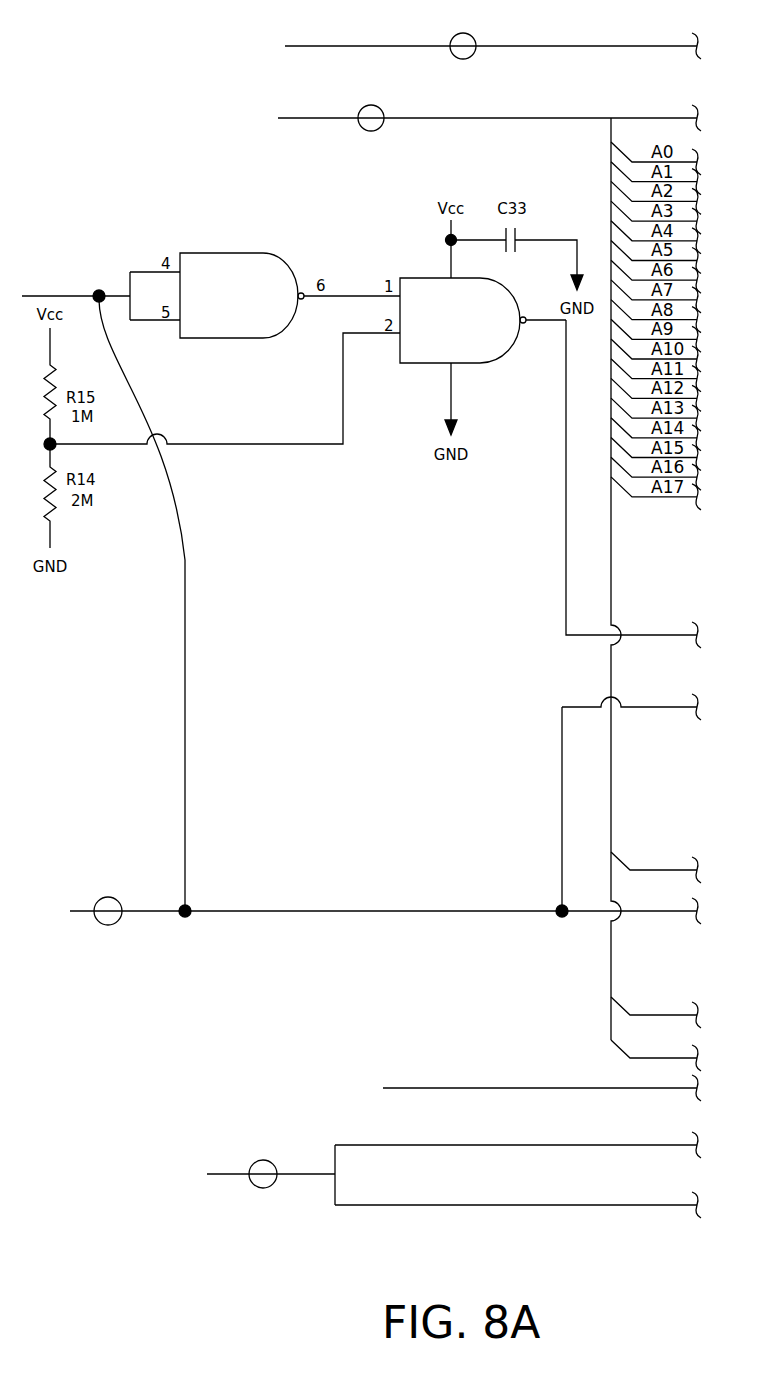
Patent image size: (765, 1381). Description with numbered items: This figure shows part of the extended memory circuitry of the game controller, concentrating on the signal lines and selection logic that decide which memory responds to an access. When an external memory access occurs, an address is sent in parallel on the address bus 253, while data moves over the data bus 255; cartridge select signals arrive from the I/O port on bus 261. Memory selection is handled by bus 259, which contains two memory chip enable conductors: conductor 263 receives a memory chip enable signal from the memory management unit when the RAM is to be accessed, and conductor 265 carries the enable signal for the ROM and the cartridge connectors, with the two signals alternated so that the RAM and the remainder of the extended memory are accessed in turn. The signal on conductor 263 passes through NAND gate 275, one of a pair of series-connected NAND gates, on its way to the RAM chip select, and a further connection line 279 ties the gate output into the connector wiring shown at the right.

The address bus 253 is at (463, 33).
The data bus 255 is at (371, 131).
The NAND gate 275 is at (277, 253).
The memory chip enable conductor 263 is at (185, 582).
The connection line to bus 279 is at (566, 600).
The memory chip enable conductor 265 is at (322, 912).
The bus 259 is at (108, 897).
The bus 261 is at (258, 1160).